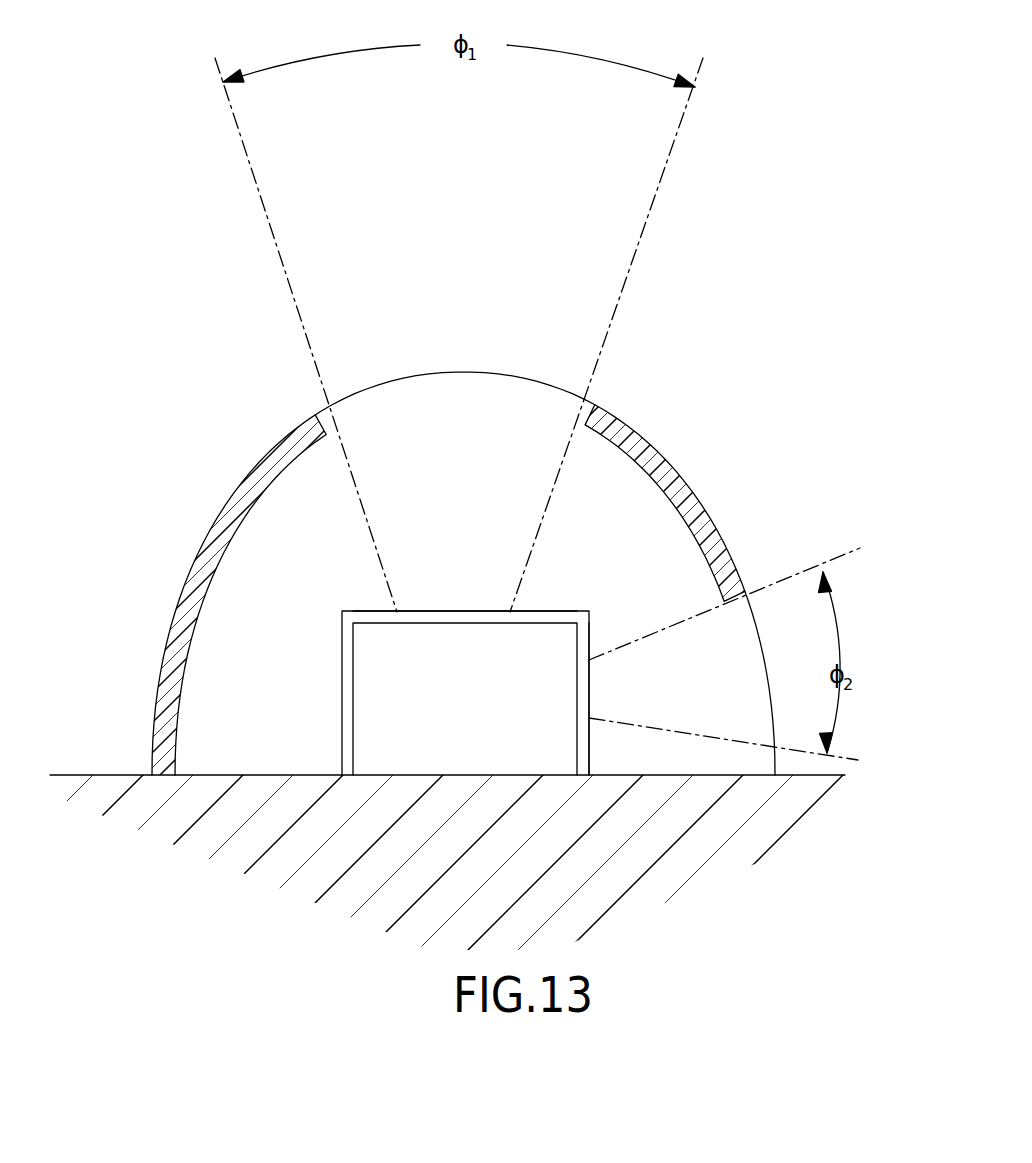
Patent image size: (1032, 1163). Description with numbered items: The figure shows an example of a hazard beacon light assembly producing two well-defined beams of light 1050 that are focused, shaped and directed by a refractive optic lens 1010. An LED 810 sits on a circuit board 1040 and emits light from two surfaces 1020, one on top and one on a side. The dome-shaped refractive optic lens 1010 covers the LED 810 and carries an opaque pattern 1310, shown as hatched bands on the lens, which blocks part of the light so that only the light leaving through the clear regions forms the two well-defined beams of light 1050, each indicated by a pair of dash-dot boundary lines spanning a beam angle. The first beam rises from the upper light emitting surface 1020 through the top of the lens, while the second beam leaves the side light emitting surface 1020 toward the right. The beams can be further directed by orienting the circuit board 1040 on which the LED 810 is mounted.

The LED 810 is at (400, 723).
The refractive optic lens 1010 is at (282, 590).
The light emitting surfaces 1020 is at (430, 612).
The circuit board 1040 is at (657, 855).
The well-defined beams of light 1050 is at (667, 212).
The opaque pattern 1310 is at (168, 639).